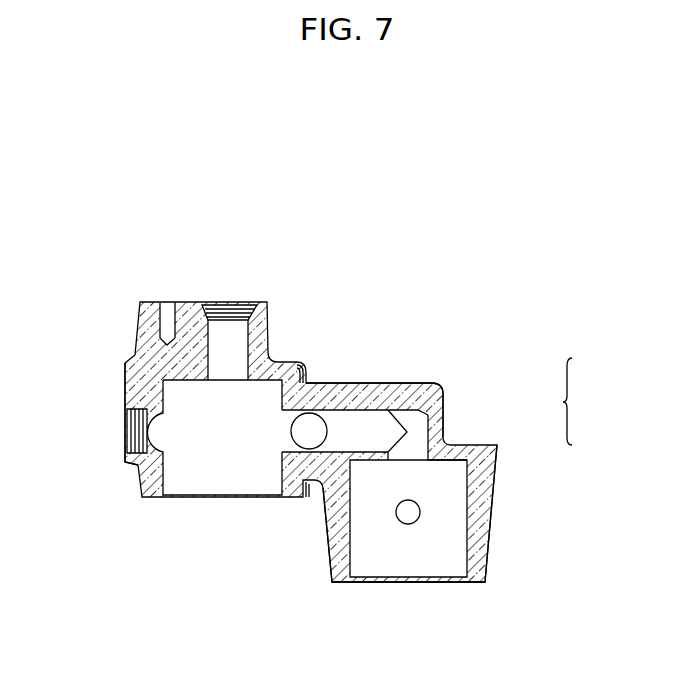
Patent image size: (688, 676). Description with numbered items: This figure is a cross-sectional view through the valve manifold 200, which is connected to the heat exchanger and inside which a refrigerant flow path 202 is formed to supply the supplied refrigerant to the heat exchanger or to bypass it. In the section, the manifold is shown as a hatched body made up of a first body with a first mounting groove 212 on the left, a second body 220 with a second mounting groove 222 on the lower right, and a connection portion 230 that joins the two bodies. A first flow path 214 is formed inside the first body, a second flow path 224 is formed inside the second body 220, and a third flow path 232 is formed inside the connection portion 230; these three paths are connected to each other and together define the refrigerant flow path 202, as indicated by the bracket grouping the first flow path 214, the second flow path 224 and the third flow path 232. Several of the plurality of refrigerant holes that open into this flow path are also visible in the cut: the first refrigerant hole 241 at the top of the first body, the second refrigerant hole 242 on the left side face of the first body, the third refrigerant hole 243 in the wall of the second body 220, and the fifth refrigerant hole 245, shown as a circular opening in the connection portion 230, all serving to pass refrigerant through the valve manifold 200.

The valve manifold 200 is at (410, 232).
The refrigerant flow path 202 is at (569, 402).
The first mounting groove 212 is at (211, 500).
The first flow path 214 is at (220, 375).
The second body 220 is at (480, 558).
The second mounting groove 222 is at (421, 587).
The second flow path 224 is at (423, 454).
The connection portion 230 is at (354, 425).
The third flow path 232 is at (360, 428).
The first refrigerant hole 241 is at (231, 294).
The second refrigerant hole 242 is at (114, 446).
The third refrigerant hole 243 is at (432, 510).
The fifth refrigerant hole 245 is at (316, 418).